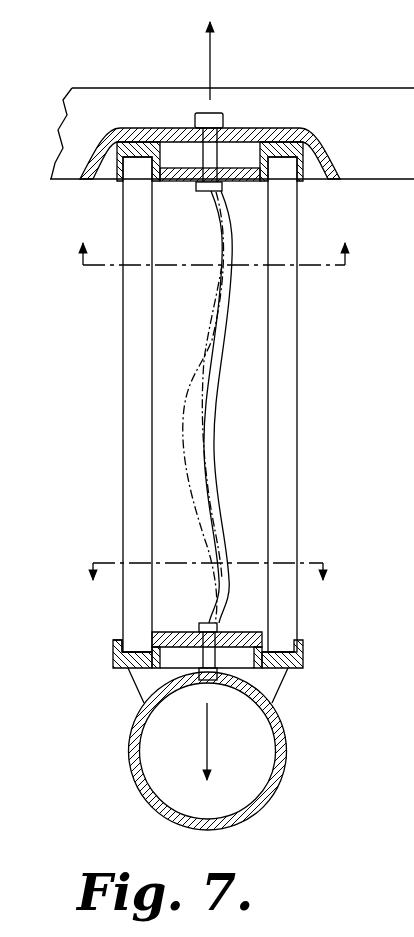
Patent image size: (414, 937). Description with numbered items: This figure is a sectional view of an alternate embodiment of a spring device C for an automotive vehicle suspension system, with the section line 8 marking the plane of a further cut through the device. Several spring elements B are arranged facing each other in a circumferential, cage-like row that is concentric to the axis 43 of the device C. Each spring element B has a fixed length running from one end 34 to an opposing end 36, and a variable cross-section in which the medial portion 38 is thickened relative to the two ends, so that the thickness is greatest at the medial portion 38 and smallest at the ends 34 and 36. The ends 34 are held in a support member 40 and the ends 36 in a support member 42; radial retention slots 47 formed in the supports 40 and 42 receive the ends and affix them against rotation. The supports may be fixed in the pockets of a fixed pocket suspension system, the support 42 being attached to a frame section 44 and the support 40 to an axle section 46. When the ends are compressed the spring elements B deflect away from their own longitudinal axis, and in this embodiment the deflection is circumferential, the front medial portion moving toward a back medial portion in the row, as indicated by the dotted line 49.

The end 34 is at (137, 638).
The opposing end 36 is at (137, 175).
The medial portion 38 is at (207, 448).
The support member 40 is at (303, 660).
The support member 42 is at (336, 150).
The axis 43 is at (211, 60).
The frame section 44 is at (127, 88).
The axle section 46 is at (282, 775).
The radial retention slots 47 is at (122, 648).
The dotted line 49 is at (297, 182).
The section line 8 is at (211, 423).
The spring element B is at (123, 362).
The spring device C is at (318, 301).